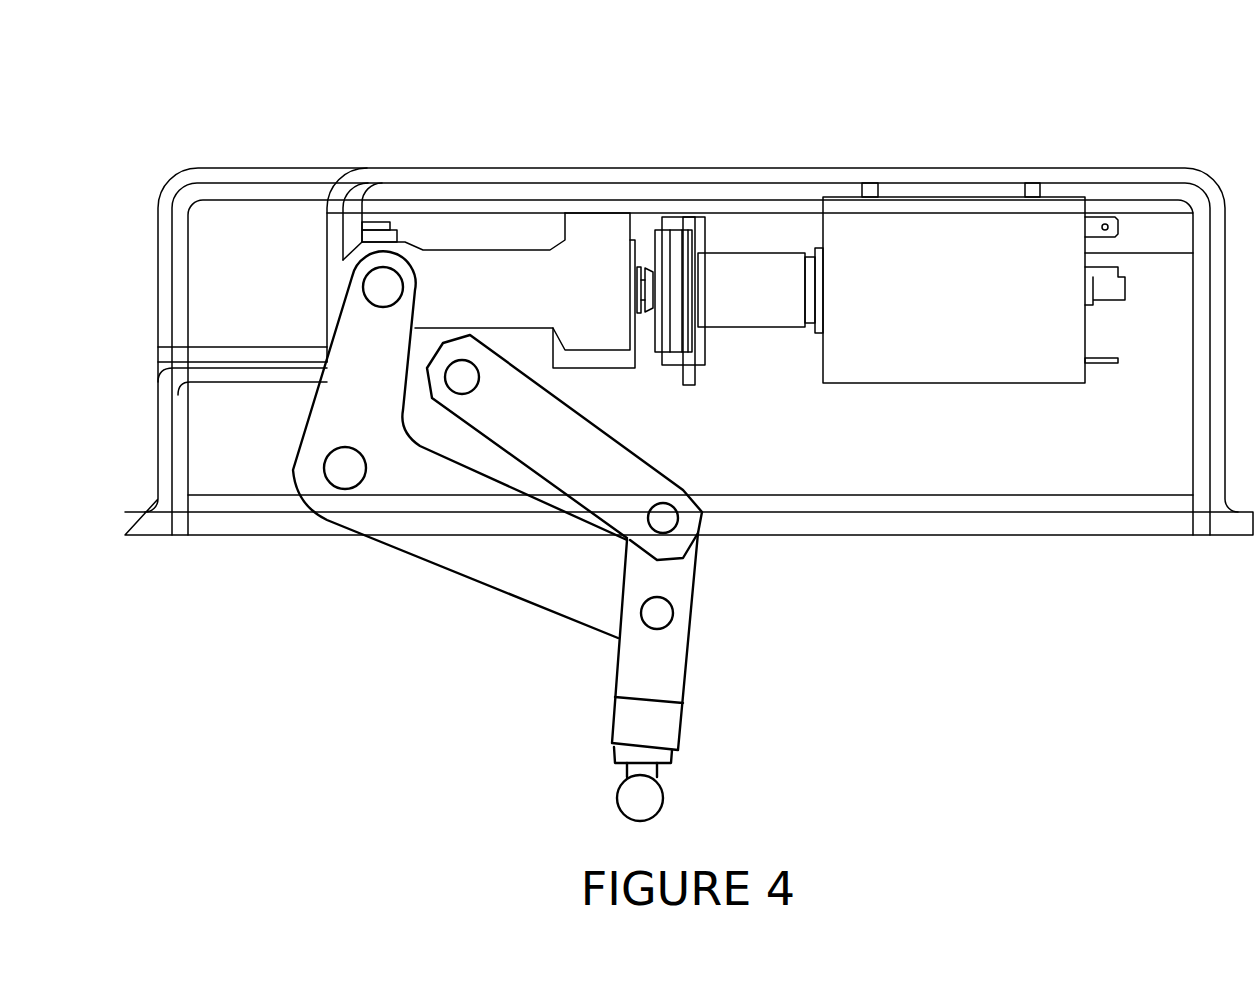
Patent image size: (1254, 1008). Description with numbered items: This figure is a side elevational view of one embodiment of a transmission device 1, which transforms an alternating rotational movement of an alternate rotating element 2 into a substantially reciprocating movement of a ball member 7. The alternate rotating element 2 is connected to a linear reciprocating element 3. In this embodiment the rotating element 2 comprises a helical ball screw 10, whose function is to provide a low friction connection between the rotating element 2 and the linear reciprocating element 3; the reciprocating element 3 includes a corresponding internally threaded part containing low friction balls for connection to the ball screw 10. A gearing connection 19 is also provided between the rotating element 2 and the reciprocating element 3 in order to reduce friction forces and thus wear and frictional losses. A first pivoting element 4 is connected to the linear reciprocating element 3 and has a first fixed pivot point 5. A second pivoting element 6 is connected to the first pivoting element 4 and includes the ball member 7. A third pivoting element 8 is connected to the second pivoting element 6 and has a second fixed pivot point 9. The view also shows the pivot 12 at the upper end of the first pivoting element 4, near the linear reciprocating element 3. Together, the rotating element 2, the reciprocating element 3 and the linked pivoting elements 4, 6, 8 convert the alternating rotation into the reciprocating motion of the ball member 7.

The transmission device 1 is at (1148, 135).
The alternate rotating element 2 is at (978, 195).
The linear reciprocating element 3 is at (612, 213).
The first pivoting element 4 is at (503, 593).
The first fixed pivot point 5 is at (337, 488).
The second pivoting element 6 is at (693, 645).
The ball member 7 is at (665, 798).
The third pivoting element 8 is at (617, 438).
The second fixed pivot point 9 is at (479, 376).
The helical ball screw 10 is at (583, 213).
The pivot bearing 12 is at (389, 266).
The gearing connection 19 is at (678, 228).